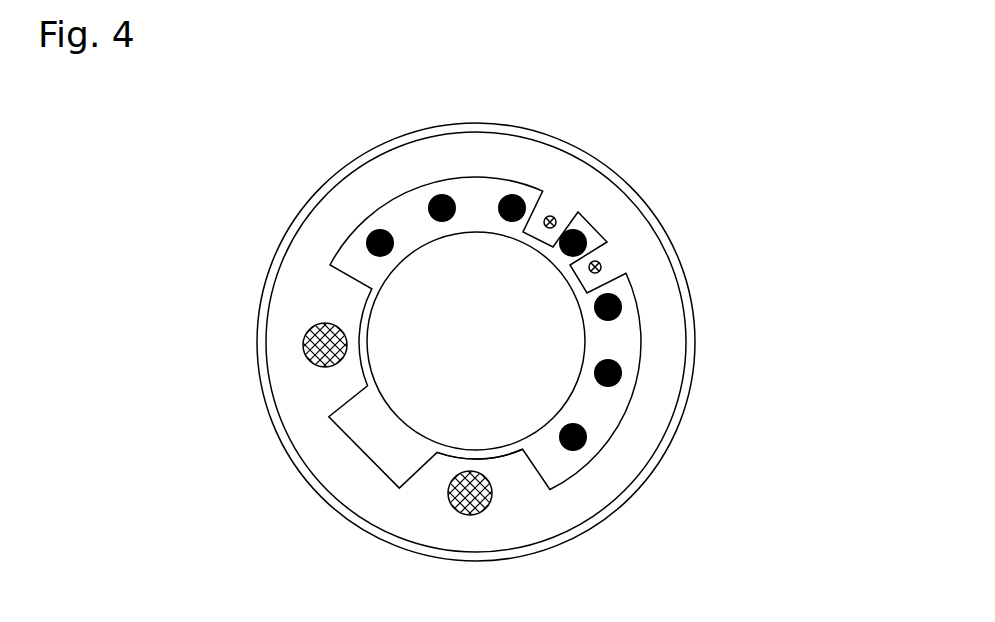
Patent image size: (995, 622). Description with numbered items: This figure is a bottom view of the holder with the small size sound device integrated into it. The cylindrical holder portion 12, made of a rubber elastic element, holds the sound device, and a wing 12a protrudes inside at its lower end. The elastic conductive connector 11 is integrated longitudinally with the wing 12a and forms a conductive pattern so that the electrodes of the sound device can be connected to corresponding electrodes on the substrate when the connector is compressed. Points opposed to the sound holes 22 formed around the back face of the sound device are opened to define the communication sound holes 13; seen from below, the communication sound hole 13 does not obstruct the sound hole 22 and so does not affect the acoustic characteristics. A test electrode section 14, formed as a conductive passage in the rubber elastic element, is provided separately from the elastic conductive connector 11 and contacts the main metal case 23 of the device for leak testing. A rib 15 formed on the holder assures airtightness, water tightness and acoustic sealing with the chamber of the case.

The elastic conductive connector 11 is at (449, 491).
The holder portion 12 is at (340, 218).
The wing 12a is at (476, 338).
The communication sound hole 13 is at (541, 409).
The test electrode section 14 is at (603, 265).
The rib 15 is at (265, 272).
The sound hole 22 is at (632, 316).
The main metal case 23 is at (615, 340).